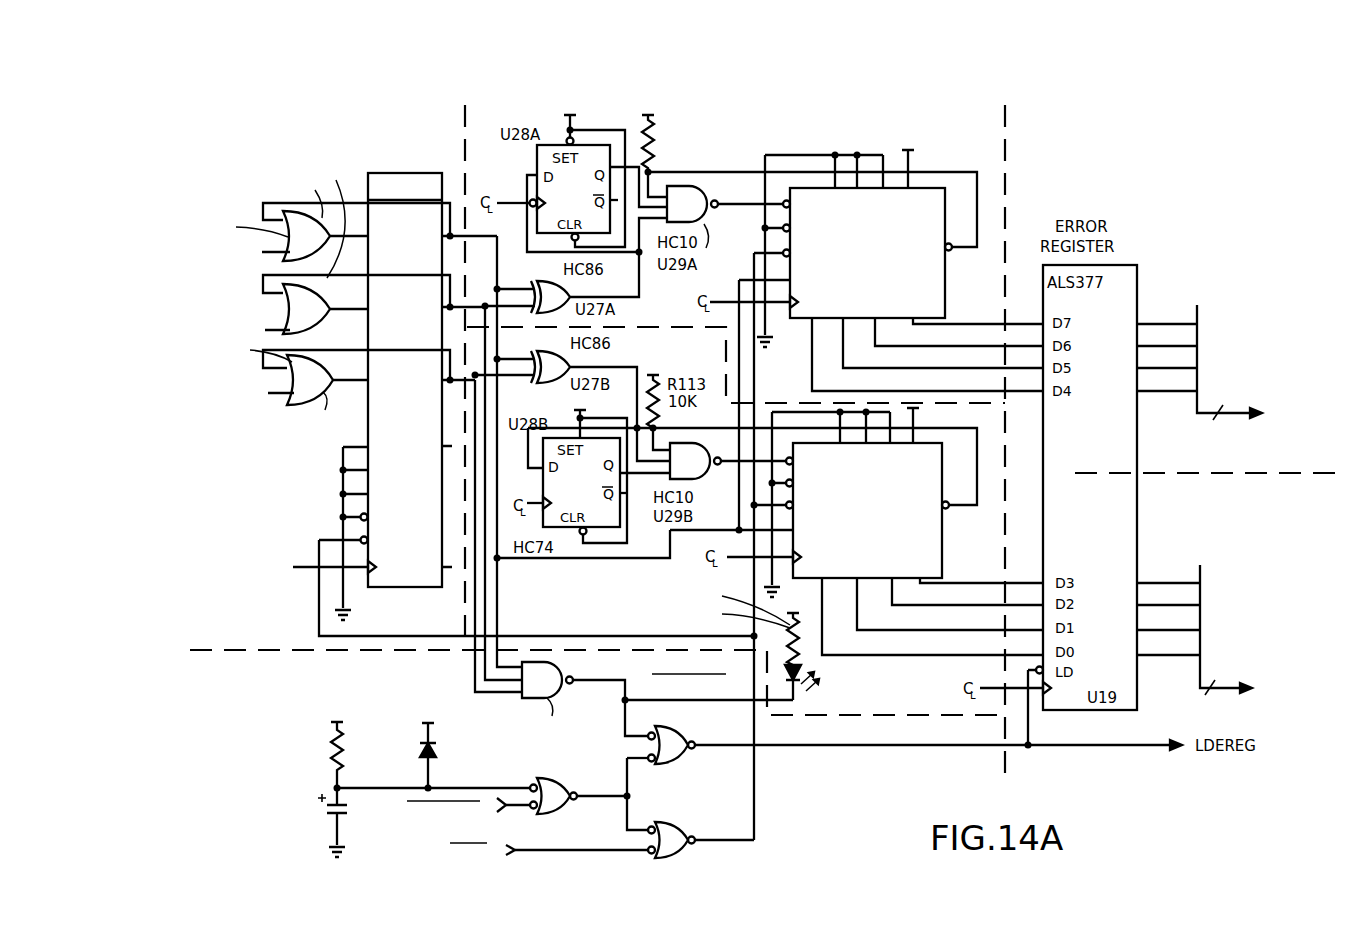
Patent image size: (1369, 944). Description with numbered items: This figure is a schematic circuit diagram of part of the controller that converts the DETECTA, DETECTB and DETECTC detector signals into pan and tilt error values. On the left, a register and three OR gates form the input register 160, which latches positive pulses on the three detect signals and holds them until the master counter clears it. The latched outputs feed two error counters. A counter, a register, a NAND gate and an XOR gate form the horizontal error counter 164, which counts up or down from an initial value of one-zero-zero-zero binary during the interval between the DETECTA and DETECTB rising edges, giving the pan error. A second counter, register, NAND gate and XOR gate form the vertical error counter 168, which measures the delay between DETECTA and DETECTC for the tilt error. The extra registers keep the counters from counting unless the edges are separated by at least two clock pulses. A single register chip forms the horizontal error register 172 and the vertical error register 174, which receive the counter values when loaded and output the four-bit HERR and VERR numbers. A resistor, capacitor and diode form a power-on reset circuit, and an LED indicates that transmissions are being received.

The input register 160 is at (463, 384).
The horizontal error counter 164 is at (1005, 166).
The vertical error counter 168 is at (900, 718).
The horizontal error register 172 is at (1241, 339).
The vertical error register 174 is at (1235, 613).